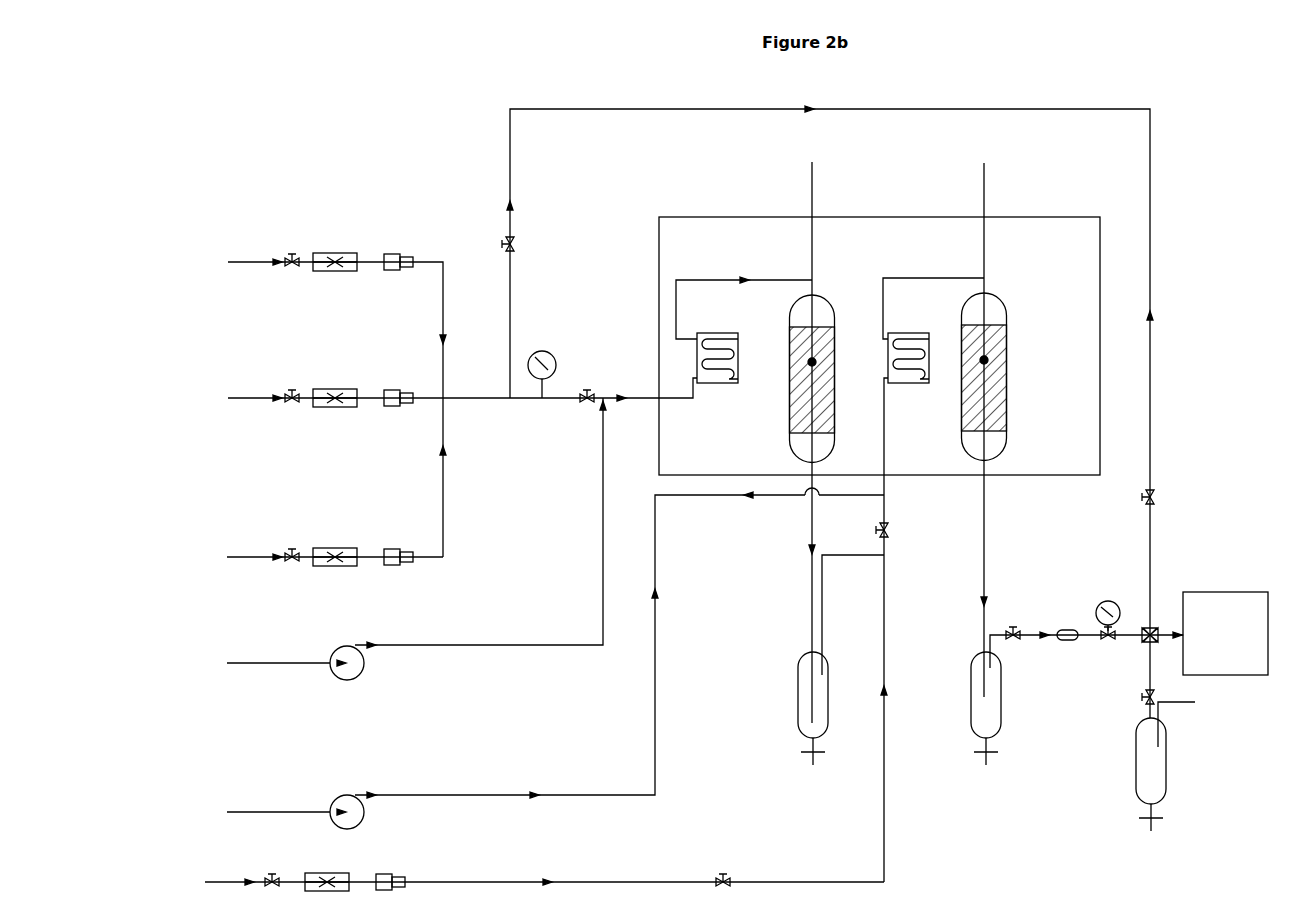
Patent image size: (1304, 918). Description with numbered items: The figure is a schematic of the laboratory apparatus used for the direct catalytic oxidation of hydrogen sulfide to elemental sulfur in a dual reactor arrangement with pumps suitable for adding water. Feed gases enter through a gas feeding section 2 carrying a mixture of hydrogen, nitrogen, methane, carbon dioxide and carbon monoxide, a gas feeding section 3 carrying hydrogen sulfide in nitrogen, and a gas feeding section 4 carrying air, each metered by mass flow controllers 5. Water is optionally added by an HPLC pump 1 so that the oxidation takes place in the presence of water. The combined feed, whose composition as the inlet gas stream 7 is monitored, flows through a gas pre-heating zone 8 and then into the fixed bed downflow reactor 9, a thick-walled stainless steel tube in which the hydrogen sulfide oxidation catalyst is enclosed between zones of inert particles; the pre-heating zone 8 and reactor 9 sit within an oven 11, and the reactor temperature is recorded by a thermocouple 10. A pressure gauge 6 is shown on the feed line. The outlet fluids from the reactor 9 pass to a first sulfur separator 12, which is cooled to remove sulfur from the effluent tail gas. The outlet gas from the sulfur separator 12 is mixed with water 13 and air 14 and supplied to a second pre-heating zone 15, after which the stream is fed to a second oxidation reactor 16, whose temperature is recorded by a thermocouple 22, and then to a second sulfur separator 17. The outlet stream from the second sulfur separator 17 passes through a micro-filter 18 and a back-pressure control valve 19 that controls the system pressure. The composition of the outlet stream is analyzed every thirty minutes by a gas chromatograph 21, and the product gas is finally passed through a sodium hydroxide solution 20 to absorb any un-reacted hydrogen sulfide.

The HPLC pump 1 is at (416, 559).
The gas feeding section 2 is at (323, 558).
The gas feeding section 3 is at (444, 393).
The gas feeding section 4 is at (316, 405).
The mass flow controllers 5 is at (359, 572).
The pressure gauge 6 is at (542, 357).
The inlet gas stream 7 is at (828, 412).
The gas pre-heating zone 8 is at (744, 348).
The downflow reactor 9 is at (812, 379).
The thermocouple 10 is at (791, 442).
The oven 11 is at (879, 346).
The first sulfur separator 12 is at (815, 660).
The water 13 is at (524, 658).
The air 14 is at (520, 883).
The second pre-heating zone 15 is at (930, 580).
The second oxidation reactor 16 is at (984, 377).
The second sulfur separator 17 is at (1061, 696).
The micro-filter 18 is at (1066, 624).
The back-pressure control valve 19 is at (1124, 638).
The sodium hydroxide solution 20 is at (1150, 766).
The gas chromatograph 21 is at (1225, 633).
The thermocouple 22 is at (1020, 418).